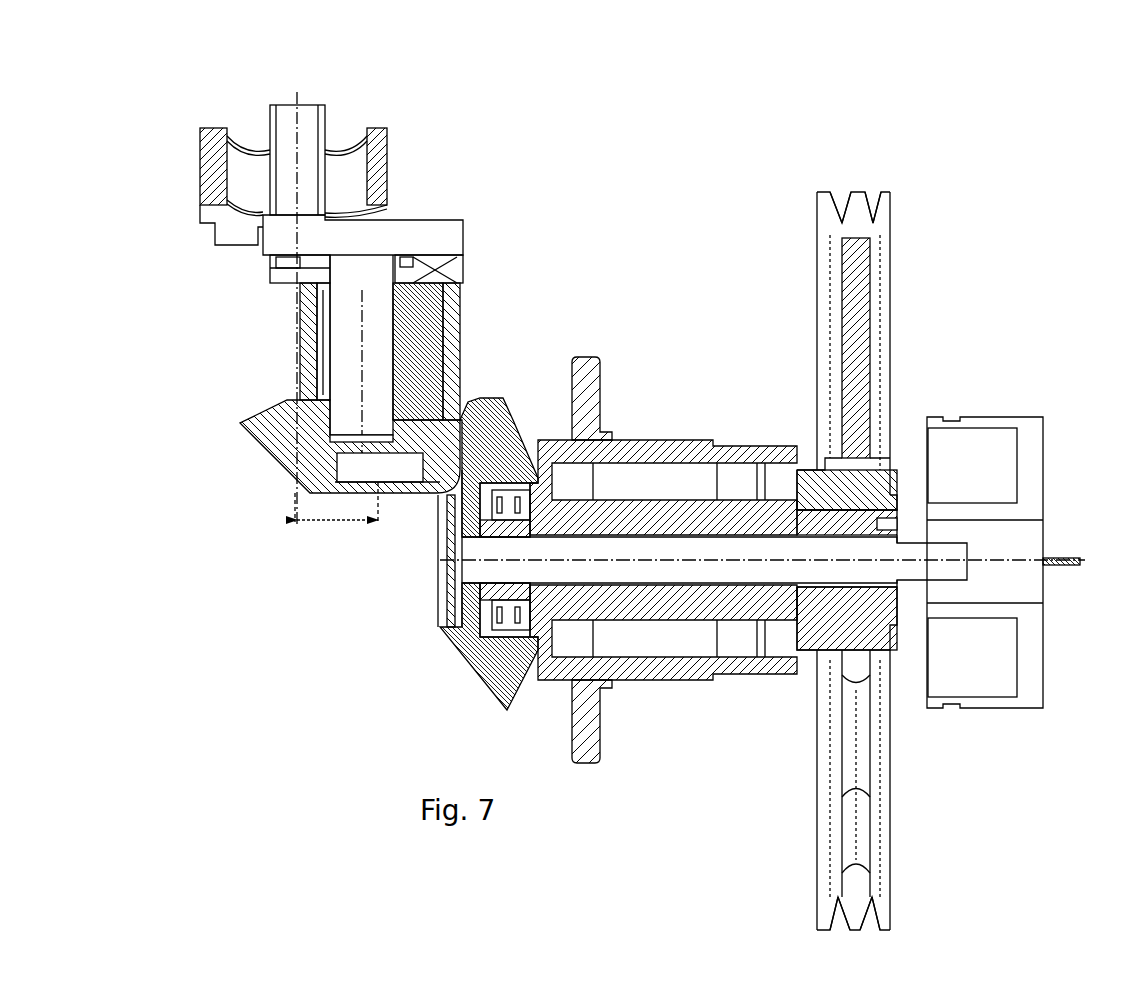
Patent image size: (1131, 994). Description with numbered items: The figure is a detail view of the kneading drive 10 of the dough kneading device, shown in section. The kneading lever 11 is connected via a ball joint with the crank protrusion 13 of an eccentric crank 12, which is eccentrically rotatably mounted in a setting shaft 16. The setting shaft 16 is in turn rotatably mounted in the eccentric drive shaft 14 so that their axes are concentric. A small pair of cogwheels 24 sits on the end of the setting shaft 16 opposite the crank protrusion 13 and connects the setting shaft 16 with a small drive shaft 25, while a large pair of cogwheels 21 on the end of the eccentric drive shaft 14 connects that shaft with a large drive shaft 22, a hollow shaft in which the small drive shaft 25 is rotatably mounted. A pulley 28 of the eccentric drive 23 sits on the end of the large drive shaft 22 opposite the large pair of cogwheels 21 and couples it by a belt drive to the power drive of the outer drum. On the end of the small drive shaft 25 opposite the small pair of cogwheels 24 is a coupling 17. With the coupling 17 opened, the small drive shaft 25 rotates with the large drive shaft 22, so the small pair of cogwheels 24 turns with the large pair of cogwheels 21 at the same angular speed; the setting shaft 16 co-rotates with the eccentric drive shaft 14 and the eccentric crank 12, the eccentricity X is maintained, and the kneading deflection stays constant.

The kneading drive 10 is at (714, 164).
The kneading lever 11 is at (210, 178).
The eccentric crank 12 is at (377, 238).
The crank protrusion 13 is at (286, 118).
The eccentric drive shaft 14 is at (455, 335).
The setting shaft 16 is at (460, 258).
The coupling 17 is at (1022, 680).
The large pair of cogwheels 21 is at (509, 391).
The large drive shaft 22 is at (693, 613).
The eccentric drive 23 is at (934, 291).
The small pair of cogwheels 24 is at (431, 499).
The small drive shaft 25 is at (603, 540).
The pulley 28 is at (855, 828).